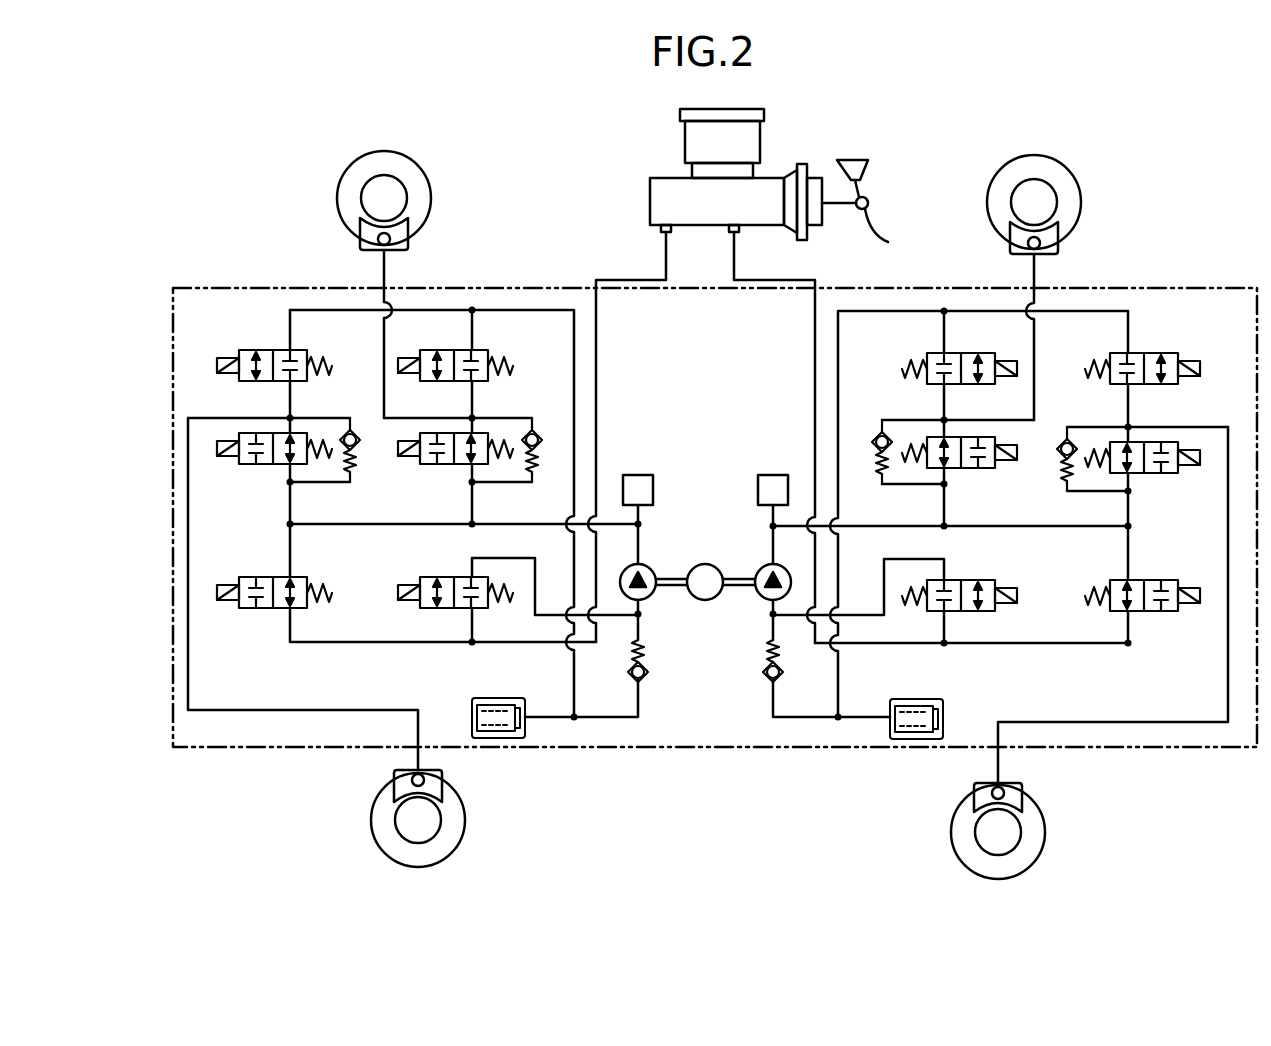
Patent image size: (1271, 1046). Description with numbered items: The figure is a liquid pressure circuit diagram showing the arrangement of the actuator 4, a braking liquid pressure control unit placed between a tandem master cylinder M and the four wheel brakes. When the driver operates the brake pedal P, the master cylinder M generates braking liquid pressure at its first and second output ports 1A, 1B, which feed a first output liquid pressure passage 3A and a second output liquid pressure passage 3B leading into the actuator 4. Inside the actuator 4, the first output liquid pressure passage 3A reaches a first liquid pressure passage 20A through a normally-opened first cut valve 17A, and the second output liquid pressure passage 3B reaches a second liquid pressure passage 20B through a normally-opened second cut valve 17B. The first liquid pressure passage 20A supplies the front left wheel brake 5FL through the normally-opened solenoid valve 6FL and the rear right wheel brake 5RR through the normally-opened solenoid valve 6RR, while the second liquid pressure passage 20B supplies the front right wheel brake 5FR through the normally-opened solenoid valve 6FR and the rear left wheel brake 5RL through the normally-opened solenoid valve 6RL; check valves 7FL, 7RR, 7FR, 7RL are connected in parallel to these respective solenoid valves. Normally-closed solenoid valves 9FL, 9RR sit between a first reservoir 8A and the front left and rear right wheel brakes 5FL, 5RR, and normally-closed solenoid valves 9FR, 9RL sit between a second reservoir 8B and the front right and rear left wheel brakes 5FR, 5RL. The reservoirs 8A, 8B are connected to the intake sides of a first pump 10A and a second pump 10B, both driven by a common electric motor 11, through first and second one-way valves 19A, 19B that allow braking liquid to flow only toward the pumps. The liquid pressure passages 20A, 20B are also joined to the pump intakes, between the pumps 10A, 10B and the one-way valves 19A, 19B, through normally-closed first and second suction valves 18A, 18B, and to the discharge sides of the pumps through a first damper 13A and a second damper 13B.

The master cylinder M is at (657, 200).
The brake pedal P is at (890, 244).
The first output port 1A is at (665, 229).
The second output port 1B is at (735, 229).
The first output liquid pressure passage 3A is at (611, 278).
The second output liquid pressure passage 3B is at (797, 279).
The actuator 4 is at (737, 750).
The rear right wheel brake 5RR is at (330, 193).
The rear left wheel brake 5RL is at (1083, 195).
The front left wheel brake 5FL is at (468, 825).
The front right wheel brake 5FR is at (950, 838).
The normally-opened type solenoid valve 6FL is at (263, 466).
The normally-opened type solenoid valve 6RR is at (447, 466).
The normally-opened type solenoid valve 6RL is at (973, 470).
The normally-opened type solenoid valve 6FR is at (1158, 474).
The check valve 7FL is at (362, 445).
The check valve 7RR is at (544, 445).
The check valve 7RL is at (870, 440).
The check valve 7FR is at (1058, 446).
The first reservoir 8A is at (467, 698).
The second reservoir 8B is at (918, 700).
The normally-closed type solenoid valve 9FL is at (252, 350).
The normally-closed type solenoid valve 9RR is at (478, 350).
The normally-closed type solenoid valve 9RL is at (955, 353).
The normally-closed type solenoid valve 9FR is at (1158, 358).
The first pump 10A is at (648, 590).
The second pump 10B is at (760, 592).
The electric motor 11 is at (705, 600).
The first damper 13A is at (645, 475).
The second damper 13B is at (760, 488).
The first cut valve 17A is at (267, 610).
The second cut valve 17B is at (1148, 615).
The first suction valve 18A is at (437, 577).
The second suction valve 18B is at (963, 580).
The first one-way valve 19A is at (645, 673).
The second one-way valve 19B is at (767, 661).
The first liquid pressure passage 20A is at (480, 526).
The second liquid pressure passage 20B is at (1053, 527).